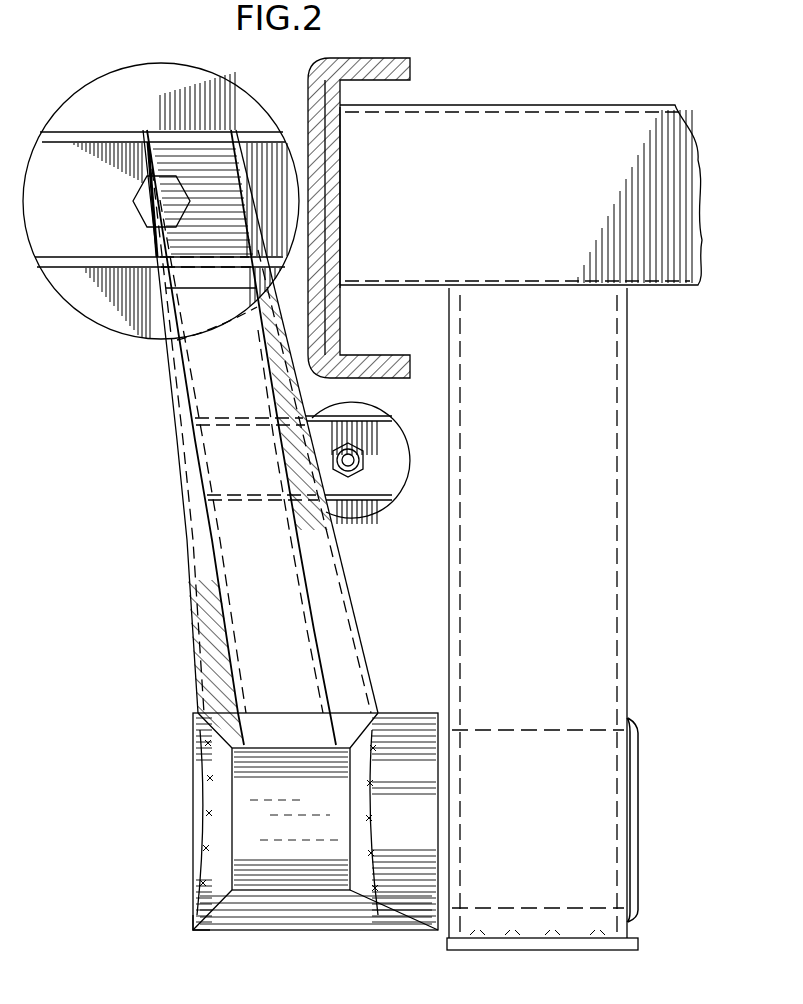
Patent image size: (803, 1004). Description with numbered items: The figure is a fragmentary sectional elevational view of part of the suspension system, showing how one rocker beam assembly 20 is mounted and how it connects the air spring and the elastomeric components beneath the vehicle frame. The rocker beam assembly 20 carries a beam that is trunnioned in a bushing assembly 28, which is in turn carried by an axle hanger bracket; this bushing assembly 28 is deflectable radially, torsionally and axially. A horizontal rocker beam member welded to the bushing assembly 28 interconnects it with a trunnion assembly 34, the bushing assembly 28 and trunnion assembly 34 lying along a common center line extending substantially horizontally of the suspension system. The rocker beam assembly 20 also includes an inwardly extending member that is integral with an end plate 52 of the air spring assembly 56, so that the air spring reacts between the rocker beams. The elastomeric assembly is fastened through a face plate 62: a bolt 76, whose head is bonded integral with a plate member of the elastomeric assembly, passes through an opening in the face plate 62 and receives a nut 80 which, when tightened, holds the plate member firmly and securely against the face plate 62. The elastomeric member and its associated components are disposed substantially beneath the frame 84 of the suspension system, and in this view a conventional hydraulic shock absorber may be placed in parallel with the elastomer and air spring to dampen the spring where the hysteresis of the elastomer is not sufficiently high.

The rocker beam assembly 20 is at (165, 583).
The bushing assembly 28 is at (222, 850).
The trunnion assembly 34 is at (181, 930).
The end plate 52 is at (100, 92).
The air spring assembly 56 is at (173, 62).
The face plate 62 is at (372, 513).
The bolt 76 is at (365, 473).
The nut 80 is at (361, 455).
The frame 84 is at (412, 58).